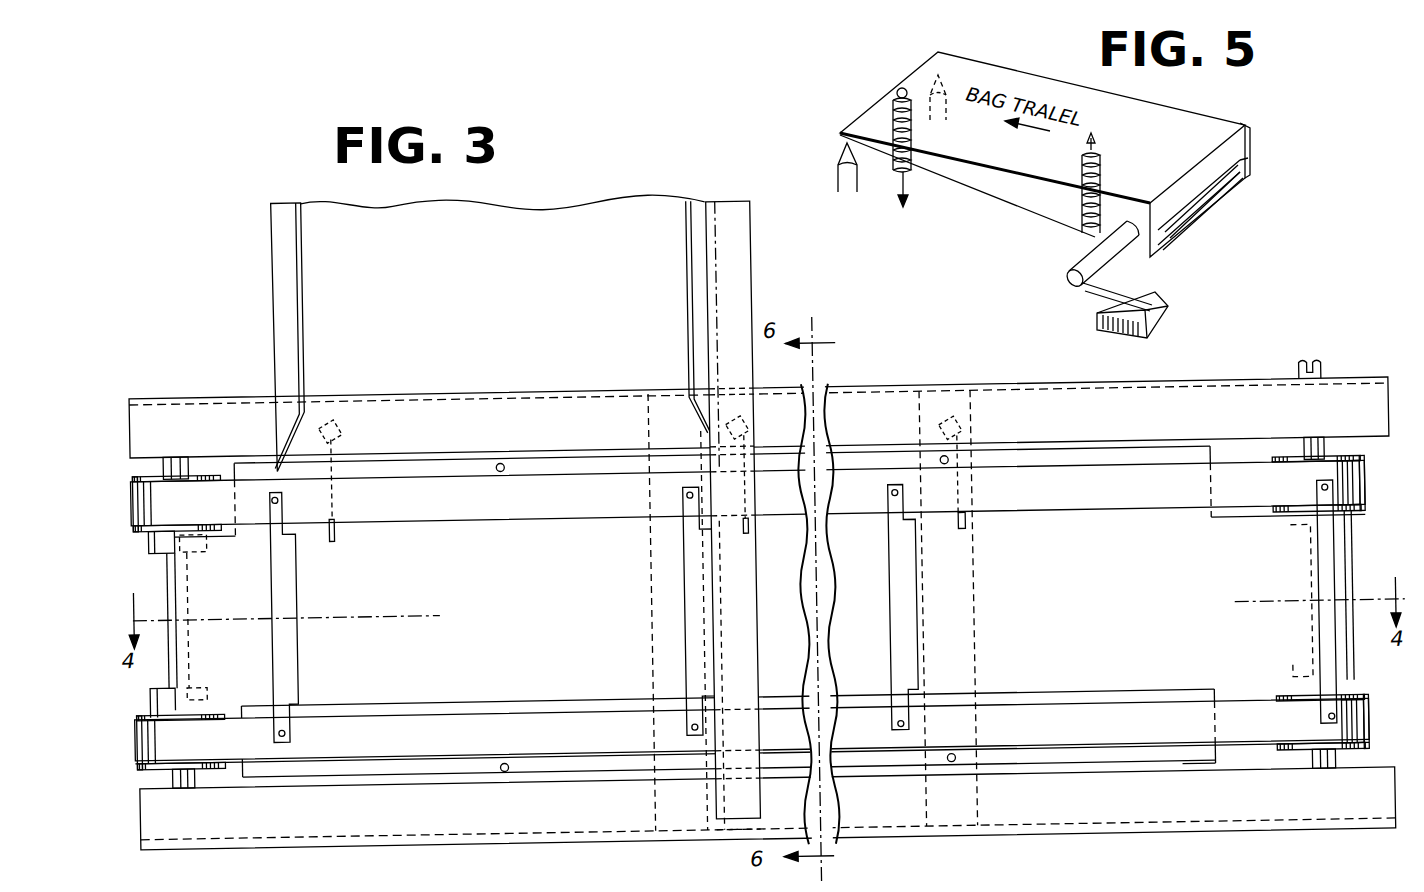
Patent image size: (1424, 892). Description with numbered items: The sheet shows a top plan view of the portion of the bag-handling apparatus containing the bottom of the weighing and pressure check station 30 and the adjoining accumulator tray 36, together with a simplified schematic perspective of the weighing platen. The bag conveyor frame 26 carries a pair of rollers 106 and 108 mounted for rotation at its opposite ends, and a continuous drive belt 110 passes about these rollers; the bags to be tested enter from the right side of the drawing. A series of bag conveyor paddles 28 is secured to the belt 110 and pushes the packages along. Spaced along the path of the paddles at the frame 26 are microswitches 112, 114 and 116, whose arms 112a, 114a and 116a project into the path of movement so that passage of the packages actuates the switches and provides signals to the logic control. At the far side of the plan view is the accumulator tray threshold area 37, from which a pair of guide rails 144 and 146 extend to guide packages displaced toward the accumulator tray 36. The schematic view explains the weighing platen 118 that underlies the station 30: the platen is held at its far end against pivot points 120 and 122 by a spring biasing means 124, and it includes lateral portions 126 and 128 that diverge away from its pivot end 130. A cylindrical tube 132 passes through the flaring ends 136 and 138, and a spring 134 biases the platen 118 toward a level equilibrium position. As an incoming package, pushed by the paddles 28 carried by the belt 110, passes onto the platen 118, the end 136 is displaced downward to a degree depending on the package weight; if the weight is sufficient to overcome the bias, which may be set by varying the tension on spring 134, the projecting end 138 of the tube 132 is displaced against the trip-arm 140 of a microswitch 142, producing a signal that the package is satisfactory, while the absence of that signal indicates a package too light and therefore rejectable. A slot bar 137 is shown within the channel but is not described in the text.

In FIG. 3, the bag conveyor frame 26 is at (1046, 385).
In FIG. 3, the bag conveyor paddles 28 is at (297, 690).
In FIG. 3, the weighing and pressure check station 30 is at (791, 599).
In FIG. 3, the accumulator tray 36 is at (505, 317).
In FIG. 3, the accumulator tray threshold area 37 is at (748, 539).
In FIG. 3, the roller 106 is at (1316, 772).
In FIG. 3, the roller 108 is at (183, 781).
In FIG. 3, the continuous drive belt 110 is at (1094, 712).
In FIG. 3, the microswitch 112 is at (950, 418).
In FIG. 3, the arm 112a is at (970, 530).
In FIG. 3, the microswitch 114 is at (756, 394).
In FIG. 3, the arm 114a is at (750, 510).
In FIG. 3, the microswitch 116 is at (335, 413).
In FIG. 3, the arm 116a is at (341, 503).
In FIG. 5, the weighing platen 118 is at (1000, 148).
In FIG. 5, the pivot point 120 is at (838, 164).
In FIG. 5, the pivot point 122 is at (933, 90).
In FIG. 5, the spring biasing means 124 is at (893, 172).
In FIG. 5, the lateral portion 126 is at (1032, 200).
In FIG. 5, the lateral portion 128 is at (1249, 132).
In FIG. 5, the pivot end 130 is at (878, 102).
In FIG. 5, the cylindrical tube 132 is at (1118, 262).
In FIG. 5, the spring 134 is at (1078, 218).
In FIG. 5, the flaring end 136 is at (1150, 246).
In FIG. 5, the slot bar 137 is at (1220, 176).
In FIG. 5, the flaring end 138 is at (1249, 173).
In FIG. 5, the trip-arm 140 is at (1092, 298).
In FIG. 5, the microswitch 142 is at (1165, 311).
In FIG. 3, the guide rail 144 is at (304, 283).
In FIG. 3, the guide rail 146 is at (696, 281).